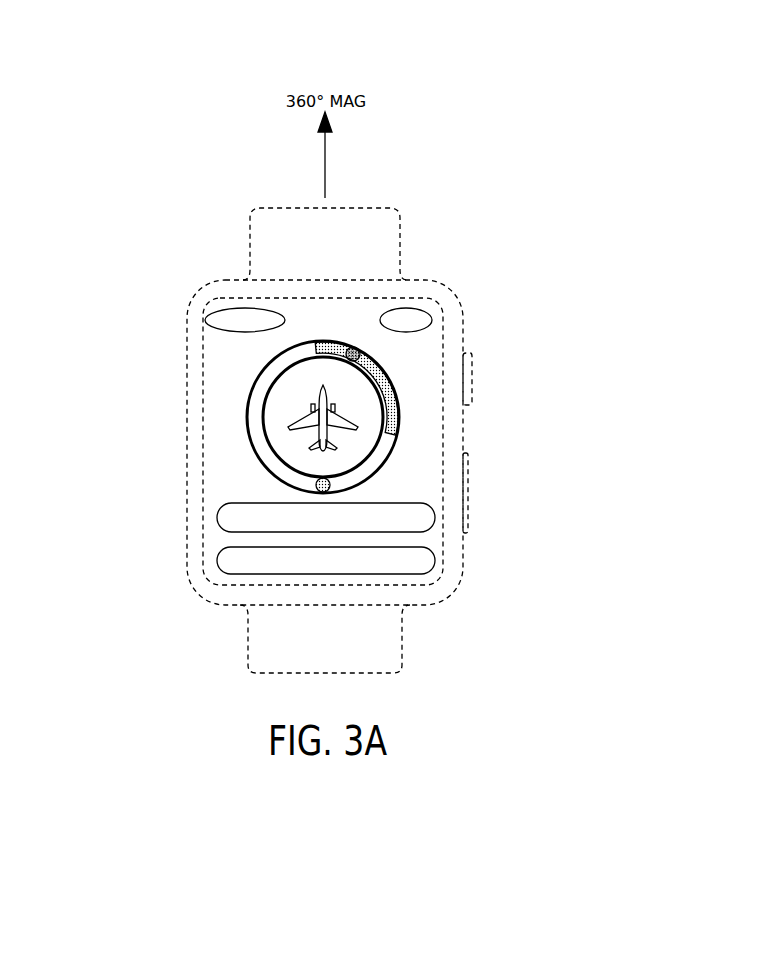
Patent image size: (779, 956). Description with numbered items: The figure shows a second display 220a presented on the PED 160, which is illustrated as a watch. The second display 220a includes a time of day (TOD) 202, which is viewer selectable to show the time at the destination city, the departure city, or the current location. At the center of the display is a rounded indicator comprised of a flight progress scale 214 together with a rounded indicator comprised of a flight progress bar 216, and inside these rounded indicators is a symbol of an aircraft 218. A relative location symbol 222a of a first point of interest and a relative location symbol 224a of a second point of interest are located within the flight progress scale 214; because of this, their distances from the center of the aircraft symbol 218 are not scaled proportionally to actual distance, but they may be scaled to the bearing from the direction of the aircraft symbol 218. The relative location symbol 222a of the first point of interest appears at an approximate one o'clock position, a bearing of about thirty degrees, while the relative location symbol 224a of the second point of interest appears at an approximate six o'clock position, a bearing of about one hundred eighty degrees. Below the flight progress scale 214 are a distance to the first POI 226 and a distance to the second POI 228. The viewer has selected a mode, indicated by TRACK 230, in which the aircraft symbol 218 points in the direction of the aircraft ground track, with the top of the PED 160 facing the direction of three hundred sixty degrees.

The PED 160 is at (368, 208).
The second display 220a is at (370, 298).
The time of day (TOD) 202 is at (418, 308).
The relative location symbol of a first point of interest 222a is at (358, 351).
The symbol of an aircraft 218 is at (343, 414).
The flight progress bar 216 is at (397, 426).
The flight progress scale 214 is at (385, 448).
The relative location symbol of a second point of interest 224a is at (331, 488).
The distance to the first POI 226 is at (435, 517).
The distance to the second POI 228 is at (435, 560).
The TRACK 230 is at (223, 330).